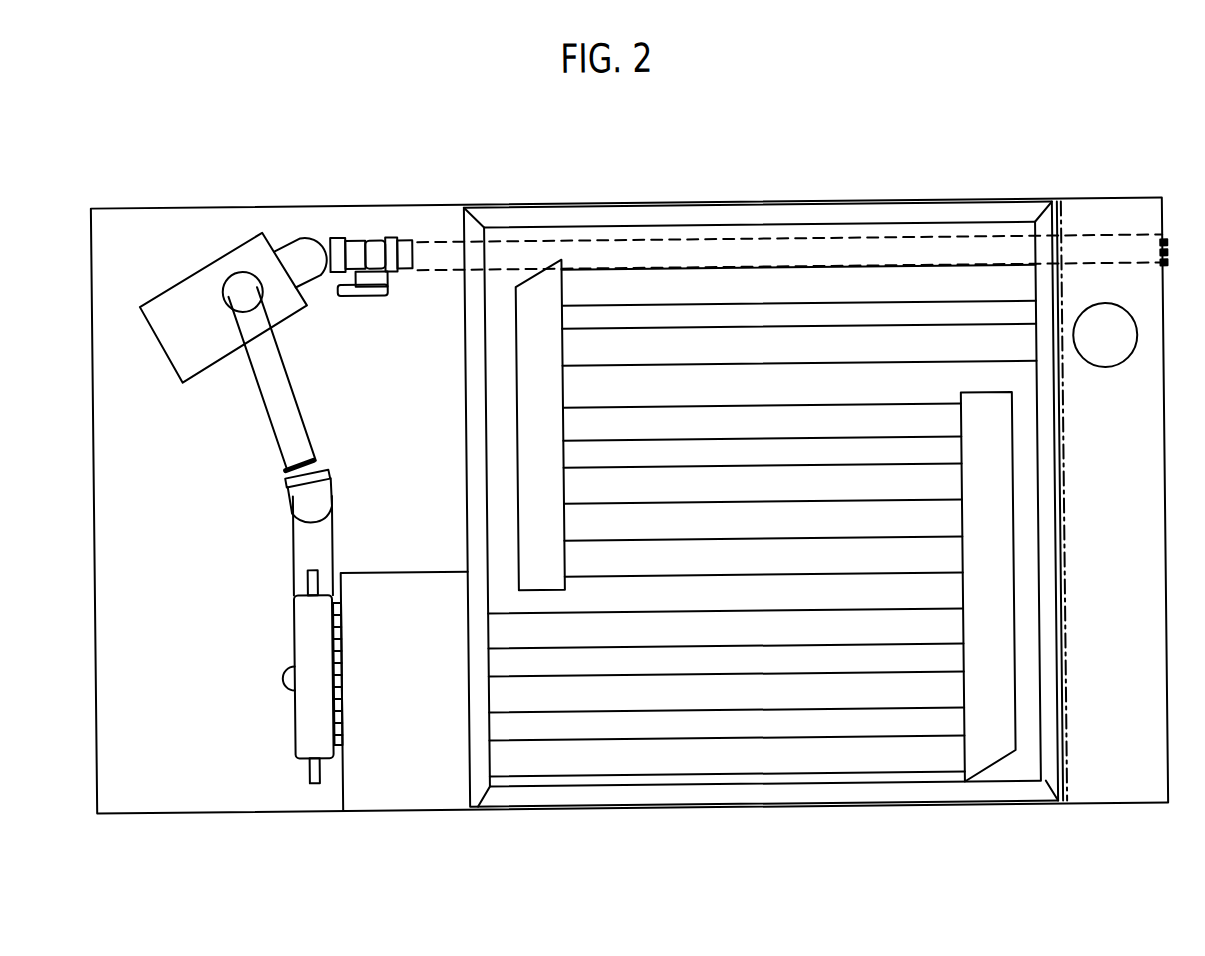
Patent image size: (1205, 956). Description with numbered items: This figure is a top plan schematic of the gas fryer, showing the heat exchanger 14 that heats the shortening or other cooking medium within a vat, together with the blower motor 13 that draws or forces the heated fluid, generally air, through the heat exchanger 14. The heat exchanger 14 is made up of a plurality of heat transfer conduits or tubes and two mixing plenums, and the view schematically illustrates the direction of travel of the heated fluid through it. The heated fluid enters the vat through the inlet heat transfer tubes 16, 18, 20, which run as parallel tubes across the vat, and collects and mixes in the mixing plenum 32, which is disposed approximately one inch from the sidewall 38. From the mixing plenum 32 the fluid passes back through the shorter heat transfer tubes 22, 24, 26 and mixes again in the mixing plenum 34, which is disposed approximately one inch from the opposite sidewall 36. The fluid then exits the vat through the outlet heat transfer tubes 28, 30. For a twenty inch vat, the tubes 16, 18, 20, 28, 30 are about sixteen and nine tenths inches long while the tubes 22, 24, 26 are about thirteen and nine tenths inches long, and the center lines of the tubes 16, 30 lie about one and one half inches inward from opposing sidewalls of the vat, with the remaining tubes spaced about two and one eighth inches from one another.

The blower motor 13 is at (291, 675).
The heat exchanger 14 is at (966, 226).
The inlet heat transfer tube 16 is at (564, 762).
The inlet heat transfer tube 18 is at (689, 690).
The inlet heat transfer tube 20 is at (857, 602).
The heat transfer tube 22 is at (945, 560).
The heat transfer tube 24 is at (943, 488).
The heat transfer tube 26 is at (948, 424).
The outlet heat transfer tube 28 is at (593, 347).
The outlet heat transfer tube 30 is at (705, 283).
The mixing plenum 32 is at (998, 702).
The mixing plenum 34 is at (533, 413).
The sidewall 36 is at (468, 716).
The sidewall 38 is at (1050, 621).